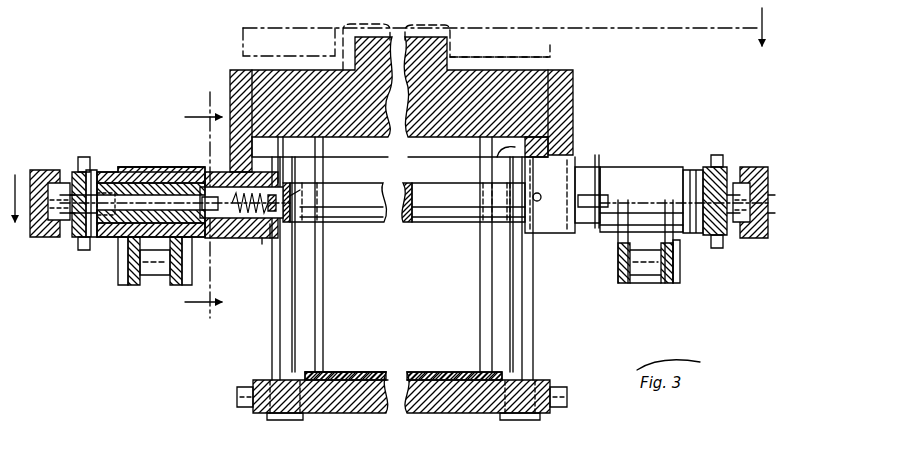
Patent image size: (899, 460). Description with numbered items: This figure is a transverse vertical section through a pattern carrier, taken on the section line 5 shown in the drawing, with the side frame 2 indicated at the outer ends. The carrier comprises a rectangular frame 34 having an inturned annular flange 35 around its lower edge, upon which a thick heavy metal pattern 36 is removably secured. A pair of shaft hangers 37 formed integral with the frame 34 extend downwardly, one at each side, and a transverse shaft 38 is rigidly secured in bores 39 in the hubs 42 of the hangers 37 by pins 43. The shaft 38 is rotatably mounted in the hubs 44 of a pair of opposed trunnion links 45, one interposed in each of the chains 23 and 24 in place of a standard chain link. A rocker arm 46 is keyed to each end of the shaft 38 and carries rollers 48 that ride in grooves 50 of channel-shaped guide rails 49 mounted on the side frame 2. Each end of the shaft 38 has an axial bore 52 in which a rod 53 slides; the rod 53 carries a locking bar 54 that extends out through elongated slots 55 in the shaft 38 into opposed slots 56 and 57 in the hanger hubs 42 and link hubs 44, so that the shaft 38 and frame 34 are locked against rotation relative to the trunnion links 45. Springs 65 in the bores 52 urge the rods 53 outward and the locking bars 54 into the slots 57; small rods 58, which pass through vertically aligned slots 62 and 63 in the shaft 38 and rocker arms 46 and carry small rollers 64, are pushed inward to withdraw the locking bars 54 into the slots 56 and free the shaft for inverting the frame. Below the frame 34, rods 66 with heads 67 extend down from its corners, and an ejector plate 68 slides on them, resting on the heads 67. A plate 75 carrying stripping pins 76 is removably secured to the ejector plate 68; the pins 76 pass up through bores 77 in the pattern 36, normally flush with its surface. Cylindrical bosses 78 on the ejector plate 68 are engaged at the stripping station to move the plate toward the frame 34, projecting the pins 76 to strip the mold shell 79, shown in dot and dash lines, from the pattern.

The side frame 2 is at (393, 115).
The section line 5- 5 is at (203, 207).
The chain 23 is at (140, 286).
The chain 24 is at (662, 284).
The rectangular frame 34 is at (570, 94).
The inturned annular flange 35 is at (497, 157).
The pattern 36 is at (292, 72).
The shaft hanger 37 is at (300, 171).
The transverse shaft 38 is at (452, 222).
The bore 39 is at (262, 238).
The hanger hub 42 is at (213, 172).
The pin 43 is at (300, 190).
The trunnion link hub 44 is at (148, 165).
The trunnion link 45 is at (122, 282).
The rocker arm 46 is at (78, 170).
The roller 48 is at (55, 222).
The guide rail 49 is at (45, 170).
The groove 50 is at (36, 237).
The axial bore 52 is at (125, 190).
The rod 53 is at (160, 183).
The locking bar 54 is at (238, 224).
The elongated slot 55 is at (242, 224).
The slot 56 is at (590, 180).
The slot 57 is at (600, 195).
The small rod 58 is at (70, 218).
The elongated slot 62 is at (100, 238).
The elongated slot 63 is at (95, 170).
The small roller 64 is at (90, 158).
The spring 65 is at (272, 240).
The rod 66 is at (272, 325).
The head 67 is at (286, 421).
The ejector plate 68 is at (443, 414).
The plate 75 is at (435, 372).
The stripping pin 76 is at (323, 303).
The bore 77 is at (338, 36).
The cylindrical boss 78 is at (237, 396).
The mold shell 79 is at (500, 50).